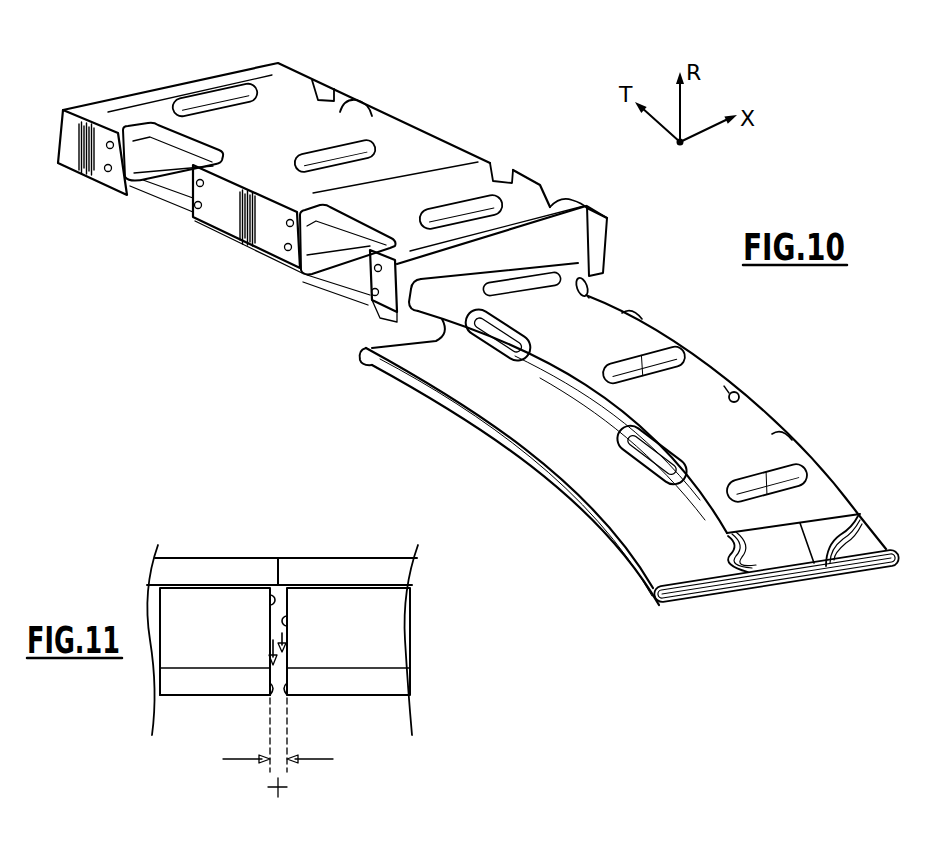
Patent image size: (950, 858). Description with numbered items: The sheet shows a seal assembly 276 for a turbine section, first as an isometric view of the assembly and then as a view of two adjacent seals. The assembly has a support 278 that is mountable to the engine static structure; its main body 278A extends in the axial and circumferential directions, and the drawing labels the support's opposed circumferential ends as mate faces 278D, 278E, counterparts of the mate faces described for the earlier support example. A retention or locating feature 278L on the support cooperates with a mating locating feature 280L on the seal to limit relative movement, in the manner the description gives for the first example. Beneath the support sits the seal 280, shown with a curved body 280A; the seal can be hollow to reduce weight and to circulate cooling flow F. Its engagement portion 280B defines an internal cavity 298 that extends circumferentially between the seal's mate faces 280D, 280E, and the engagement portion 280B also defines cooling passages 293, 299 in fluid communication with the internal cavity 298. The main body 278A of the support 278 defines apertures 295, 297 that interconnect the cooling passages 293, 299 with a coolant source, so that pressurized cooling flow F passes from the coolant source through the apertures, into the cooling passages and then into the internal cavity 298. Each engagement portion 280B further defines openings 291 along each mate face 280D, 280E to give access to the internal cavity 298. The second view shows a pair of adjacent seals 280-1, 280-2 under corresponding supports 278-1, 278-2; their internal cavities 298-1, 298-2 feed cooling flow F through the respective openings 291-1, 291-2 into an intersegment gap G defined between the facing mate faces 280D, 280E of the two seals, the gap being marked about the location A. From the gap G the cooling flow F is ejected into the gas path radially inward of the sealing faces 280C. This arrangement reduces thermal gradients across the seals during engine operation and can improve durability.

In FIG. 10, the seal assembly 276 is at (114, 80).
In FIG. 11, the seal assembly 276 is at (163, 505).
In FIG. 10, the support 278 is at (310, 60).
In FIG. 10, the main body 278A is at (418, 123).
In FIG. 10, the side flange of bracket 278D is at (58, 150).
In FIG. 10, the end flange of bracket 278E is at (606, 237).
In FIG. 10, the lip of bracket rail 278L is at (347, 103).
In FIG. 10, the slot in top plate 295 is at (348, 152).
In FIG. 10, the apertures 297 is at (481, 197).
In FIG. 10, the seal 280 is at (586, 260).
In FIG. 10, the lower flange of strip 280A is at (383, 372).
In FIG. 10, the engagement portion 280B is at (592, 286).
In FIG. 10, the mate face 280D is at (357, 350).
In FIG. 11, the mate face 280D is at (272, 698).
In FIG. 10, the mate face 280E is at (805, 577).
In FIG. 11, the mate face 280E is at (287, 700).
In FIG. 10, the locking tab of strip 280L is at (510, 323).
In FIG. 10, the slot in strip 293 is at (667, 360).
In FIG. 10, the cooling passages 299 is at (783, 473).
In FIG. 10, the openings 291 is at (763, 568).
In FIG. 10, the internal cavity 298 is at (773, 565).
In FIG. 11, the first bracket 278-1 is at (175, 557).
In FIG. 11, the second bracket 278-2 is at (397, 557).
In FIG. 11, the seal 280-1 is at (205, 573).
In FIG. 11, the seal 280-2 is at (336, 573).
In FIG. 11, the first cutout 291-1 is at (266, 602).
In FIG. 11, the second cutout 291-2 is at (291, 622).
In FIG. 11, the first lip 298-1 is at (232, 663).
In FIG. 11, the second lip 298-2 is at (398, 663).
In FIG. 11, the sealing faces 280C is at (187, 697).
In FIG. 11, the cooling flow F is at (272, 648).
In FIG. 11, the intersegment gap G is at (248, 759).
In FIG. 11, the axis A is at (285, 792).